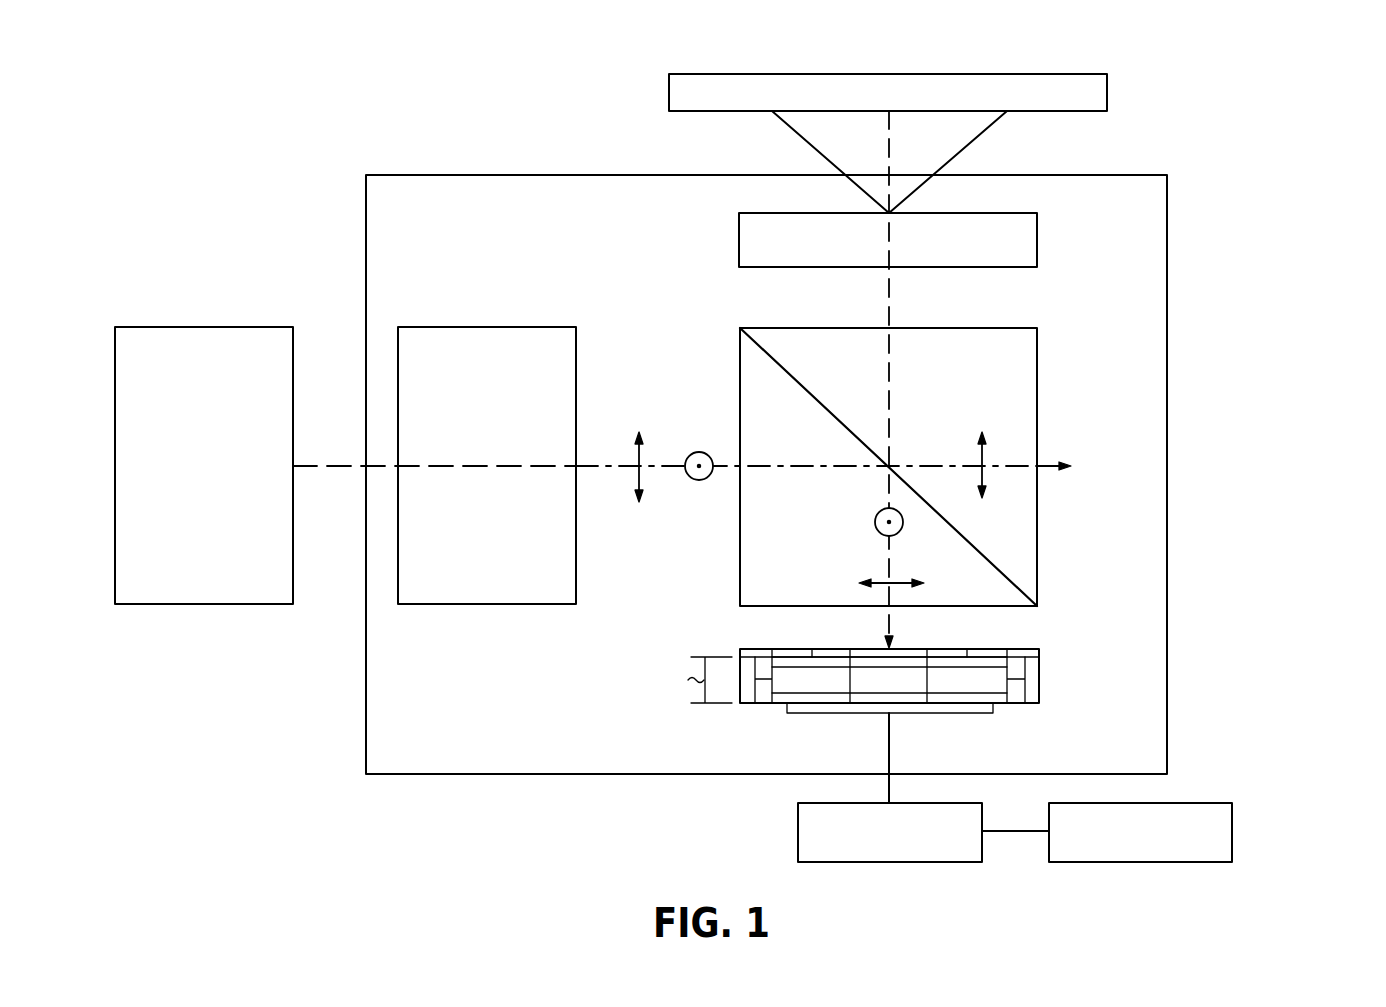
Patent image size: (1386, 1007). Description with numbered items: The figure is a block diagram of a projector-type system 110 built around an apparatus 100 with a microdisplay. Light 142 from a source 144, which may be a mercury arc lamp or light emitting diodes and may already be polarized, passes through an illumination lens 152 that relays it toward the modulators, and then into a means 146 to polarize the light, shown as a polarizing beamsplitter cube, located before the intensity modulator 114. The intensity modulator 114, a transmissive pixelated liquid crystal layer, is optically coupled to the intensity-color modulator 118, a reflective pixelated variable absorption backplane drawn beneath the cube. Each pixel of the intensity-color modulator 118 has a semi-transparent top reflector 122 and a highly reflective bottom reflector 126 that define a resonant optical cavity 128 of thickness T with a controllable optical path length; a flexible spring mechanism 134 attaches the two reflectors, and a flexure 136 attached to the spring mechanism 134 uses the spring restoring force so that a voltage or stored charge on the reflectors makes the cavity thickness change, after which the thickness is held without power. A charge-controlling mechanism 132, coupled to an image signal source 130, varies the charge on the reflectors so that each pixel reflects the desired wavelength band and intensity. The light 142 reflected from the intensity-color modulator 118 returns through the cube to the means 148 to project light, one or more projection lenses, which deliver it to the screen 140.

The apparatus 100 is at (1195, 158).
The system 110 is at (1297, 70).
The intensity modulator 114 is at (886, 688).
The intensity-color modulator 118 is at (1050, 722).
The top reflector 122 is at (765, 665).
The bottom reflector 126 is at (766, 704).
The optical cavity 128 is at (850, 694).
The image signal source 130 is at (1237, 834).
The charge-controlling mechanism 132 is at (797, 831).
The spring mechanism 134 is at (1043, 680).
The flexure 136 is at (949, 715).
The screen 140 is at (1110, 93).
The light 142 is at (791, 134).
The source 144 is at (203, 326).
The means to polarize the light 146 is at (960, 326).
The means to project light 148 is at (1041, 241).
The illumination lens 152 is at (486, 326).